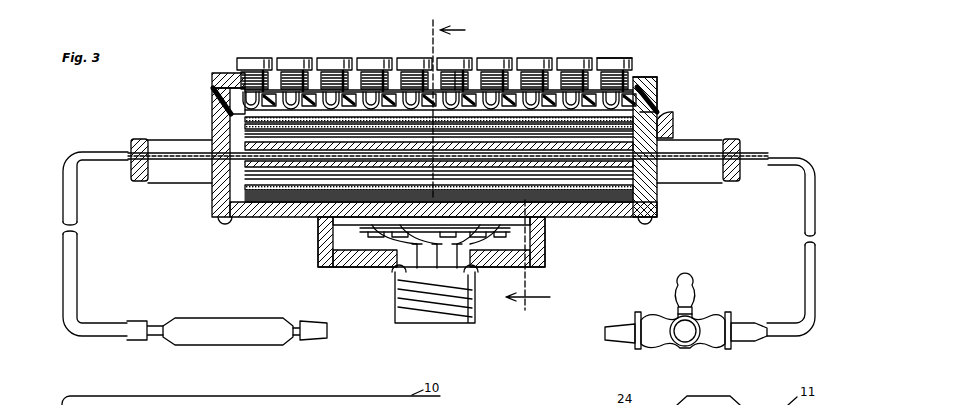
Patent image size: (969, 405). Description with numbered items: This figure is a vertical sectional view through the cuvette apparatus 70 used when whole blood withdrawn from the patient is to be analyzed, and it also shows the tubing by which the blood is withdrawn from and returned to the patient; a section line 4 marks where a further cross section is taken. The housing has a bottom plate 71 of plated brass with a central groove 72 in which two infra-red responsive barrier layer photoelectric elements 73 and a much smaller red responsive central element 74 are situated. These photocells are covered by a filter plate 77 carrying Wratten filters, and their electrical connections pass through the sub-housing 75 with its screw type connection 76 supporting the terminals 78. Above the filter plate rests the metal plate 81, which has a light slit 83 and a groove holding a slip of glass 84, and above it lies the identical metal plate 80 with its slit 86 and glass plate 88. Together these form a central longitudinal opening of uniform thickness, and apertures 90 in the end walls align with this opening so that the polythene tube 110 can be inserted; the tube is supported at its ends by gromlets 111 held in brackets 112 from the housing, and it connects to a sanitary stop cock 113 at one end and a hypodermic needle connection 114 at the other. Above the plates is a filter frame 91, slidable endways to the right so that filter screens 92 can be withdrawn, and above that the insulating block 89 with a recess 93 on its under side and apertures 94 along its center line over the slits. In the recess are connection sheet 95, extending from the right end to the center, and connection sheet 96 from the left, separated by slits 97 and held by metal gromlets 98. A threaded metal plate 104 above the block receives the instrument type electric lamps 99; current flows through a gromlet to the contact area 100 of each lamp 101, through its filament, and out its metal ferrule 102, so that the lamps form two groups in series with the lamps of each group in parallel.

The section line 4- 4 is at (496, 165).
The cuvette apparatus 70 is at (177, 104).
The bottom plate 71 is at (600, 212).
The central groove 72 is at (399, 242).
The barrier layer photoelectric elements 73 is at (300, 202).
The central barrier layer photoelectric element 74 is at (452, 230).
The sub-housing 75 is at (545, 262).
The screw type connection 76 is at (395, 306).
The filter plate 77 is at (630, 210).
The terminals 78 is at (403, 252).
The metal plate 80 is at (232, 152).
The plate 81 is at (216, 176).
The light slit 83 is at (241, 190).
The slip of glass 84 is at (262, 199).
The slit 86 is at (232, 143).
The glass plate 88 is at (567, 137).
The insulating block 89 is at (660, 108).
The apertures 90 is at (222, 152).
The filter frame 91 is at (668, 128).
The filter screens 92 is at (352, 120).
The recess 93 is at (660, 95).
The apertures 94 is at (320, 96).
The connection sheet 95 is at (648, 82).
The connection sheet 96 is at (282, 90).
The slits 97 is at (452, 78).
The metal gromlets 98 is at (520, 92).
The instrument type electric lamps 99 is at (262, 80).
The contact area 100 is at (648, 72).
The lamp 101 is at (630, 50).
The metal ferrule 102 is at (608, 58).
The metal plate 104 is at (212, 80).
The tube 110 is at (790, 160).
The gromlets 111 is at (138, 181).
The brackets 112 is at (170, 184).
The sanitary stop cock 113 is at (690, 322).
The hypodermic needle connection 114 is at (228, 320).